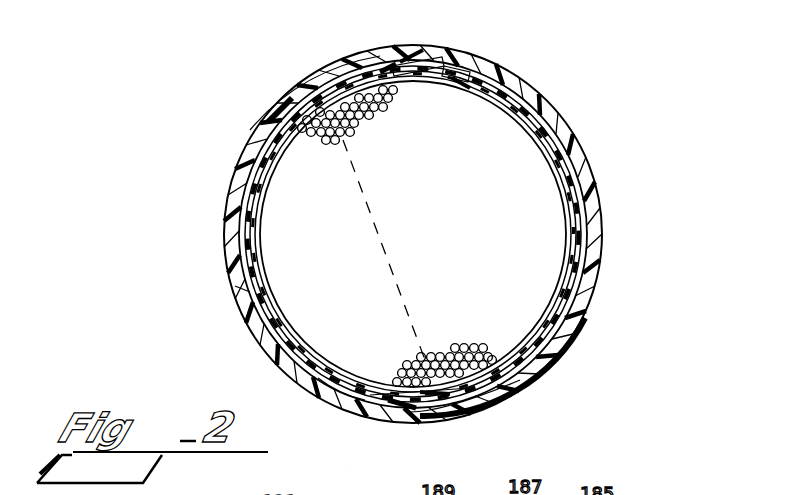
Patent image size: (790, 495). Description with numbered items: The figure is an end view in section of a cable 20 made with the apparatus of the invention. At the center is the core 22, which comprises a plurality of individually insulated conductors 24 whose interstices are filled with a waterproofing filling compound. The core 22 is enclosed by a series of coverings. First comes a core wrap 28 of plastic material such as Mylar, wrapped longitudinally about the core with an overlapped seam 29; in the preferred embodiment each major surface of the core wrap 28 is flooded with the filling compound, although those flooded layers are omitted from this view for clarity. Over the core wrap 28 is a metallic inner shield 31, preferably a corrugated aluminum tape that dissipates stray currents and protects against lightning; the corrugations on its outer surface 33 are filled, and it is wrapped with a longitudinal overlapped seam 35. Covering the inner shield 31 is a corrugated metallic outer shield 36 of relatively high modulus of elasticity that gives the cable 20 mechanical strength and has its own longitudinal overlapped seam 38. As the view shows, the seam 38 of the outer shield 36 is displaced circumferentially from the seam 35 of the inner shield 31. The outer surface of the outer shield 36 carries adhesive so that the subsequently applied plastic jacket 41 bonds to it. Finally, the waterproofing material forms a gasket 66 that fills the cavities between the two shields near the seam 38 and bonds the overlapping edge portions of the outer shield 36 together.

The cable 20 is at (578, 92).
The core 22 is at (473, 220).
The individually insulated conductors 24 is at (368, 118).
The core wrap 28 is at (353, 376).
The overlapped seam 29 is at (428, 378).
The metallic inner shield 31 is at (238, 283).
The outer surface 33 is at (400, 416).
The longitudinal overlapped seam 35 is at (430, 400).
The metallic outer shield 36 is at (240, 262).
The longitudinal overlapped seam 38 is at (452, 62).
The jacket 41 is at (262, 116).
The gasket 66 is at (410, 50).